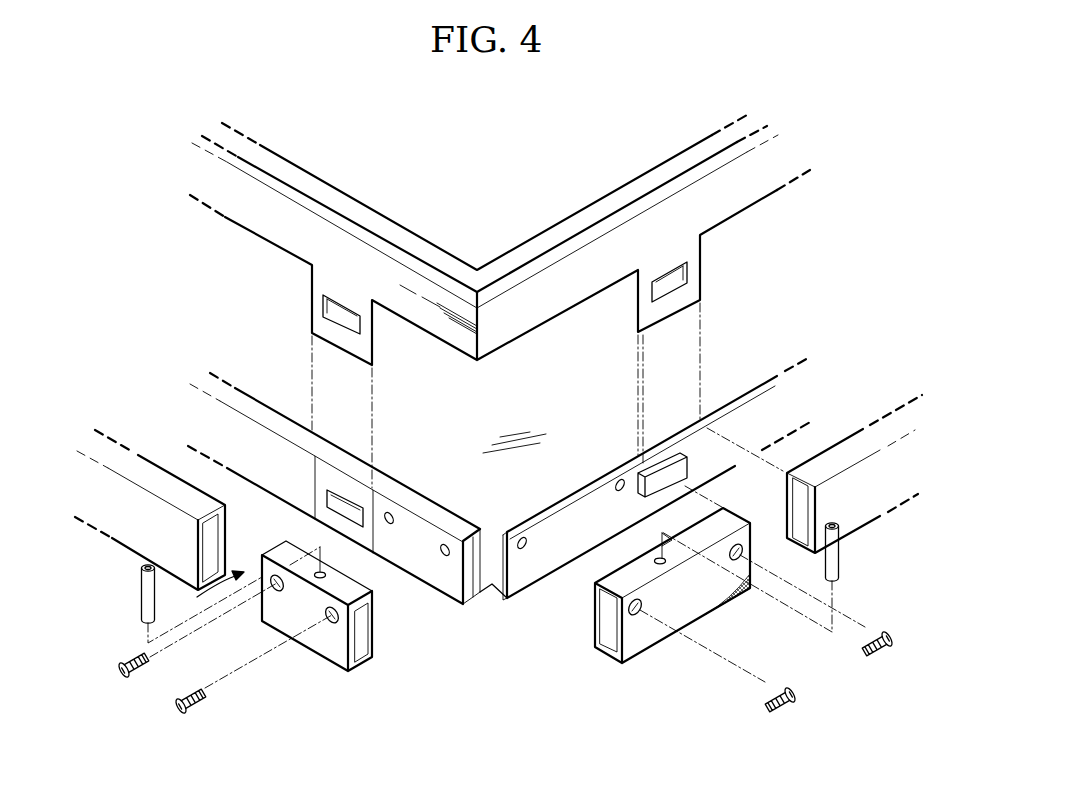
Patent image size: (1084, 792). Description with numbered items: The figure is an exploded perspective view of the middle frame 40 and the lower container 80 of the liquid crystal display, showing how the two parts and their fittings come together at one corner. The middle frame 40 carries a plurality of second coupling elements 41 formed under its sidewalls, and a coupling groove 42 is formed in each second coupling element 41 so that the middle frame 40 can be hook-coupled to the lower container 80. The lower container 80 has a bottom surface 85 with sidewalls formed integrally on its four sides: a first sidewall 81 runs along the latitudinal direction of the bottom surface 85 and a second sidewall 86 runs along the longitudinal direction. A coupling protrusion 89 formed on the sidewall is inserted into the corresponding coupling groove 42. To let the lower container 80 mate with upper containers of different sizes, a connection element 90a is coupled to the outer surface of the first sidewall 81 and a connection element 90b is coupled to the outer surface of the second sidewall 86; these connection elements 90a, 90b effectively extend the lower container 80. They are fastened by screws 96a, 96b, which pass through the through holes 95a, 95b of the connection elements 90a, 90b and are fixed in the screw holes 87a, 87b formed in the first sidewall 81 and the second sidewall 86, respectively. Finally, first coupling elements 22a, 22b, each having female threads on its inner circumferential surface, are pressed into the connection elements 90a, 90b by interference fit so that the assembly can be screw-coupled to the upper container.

The middle frame 40 is at (500, 287).
The second coupling element 41 is at (362, 345).
The coupling groove 42 is at (323, 304).
The first coupling element 22a is at (140, 592).
The first coupling element 22b is at (840, 557).
The lower container 80 is at (205, 600).
The first sidewall 81 is at (347, 493).
The bottom surface 85 is at (679, 502).
The second sidewall 86 is at (600, 497).
The screw hole 87a is at (445, 556).
The screw hole 87b is at (522, 548).
The coupling protrusion 89 is at (393, 519).
The connection element 90a is at (261, 629).
The connection element 90b is at (730, 611).
The through hole 95a is at (332, 623).
The through hole 95b is at (641, 613).
The screw 96a is at (173, 697).
The screw 96b is at (803, 691).